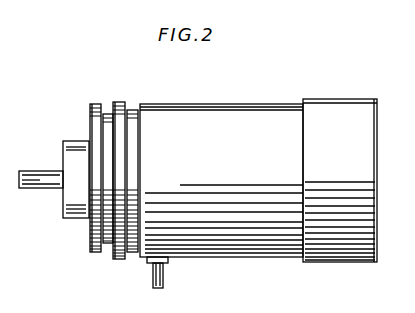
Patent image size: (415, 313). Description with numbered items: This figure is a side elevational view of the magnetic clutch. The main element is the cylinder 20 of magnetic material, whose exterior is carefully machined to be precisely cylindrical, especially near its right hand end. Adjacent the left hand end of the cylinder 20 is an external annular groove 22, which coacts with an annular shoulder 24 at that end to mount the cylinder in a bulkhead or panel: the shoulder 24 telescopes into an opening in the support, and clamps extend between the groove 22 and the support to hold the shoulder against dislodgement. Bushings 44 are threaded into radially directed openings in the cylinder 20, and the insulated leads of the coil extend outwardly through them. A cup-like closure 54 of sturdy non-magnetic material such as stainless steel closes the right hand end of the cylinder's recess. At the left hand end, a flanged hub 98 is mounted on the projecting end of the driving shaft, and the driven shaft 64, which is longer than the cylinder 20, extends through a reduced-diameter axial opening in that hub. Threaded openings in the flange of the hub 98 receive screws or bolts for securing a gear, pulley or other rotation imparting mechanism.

The cylinder 20 is at (195, 110).
The external annular groove 22 is at (133, 258).
The annular shoulder 24 is at (109, 113).
The bushings 44 is at (168, 262).
The cup-like closure 54 is at (343, 102).
The driven shaft 64 is at (34, 189).
The flanged hub 98 is at (75, 140).